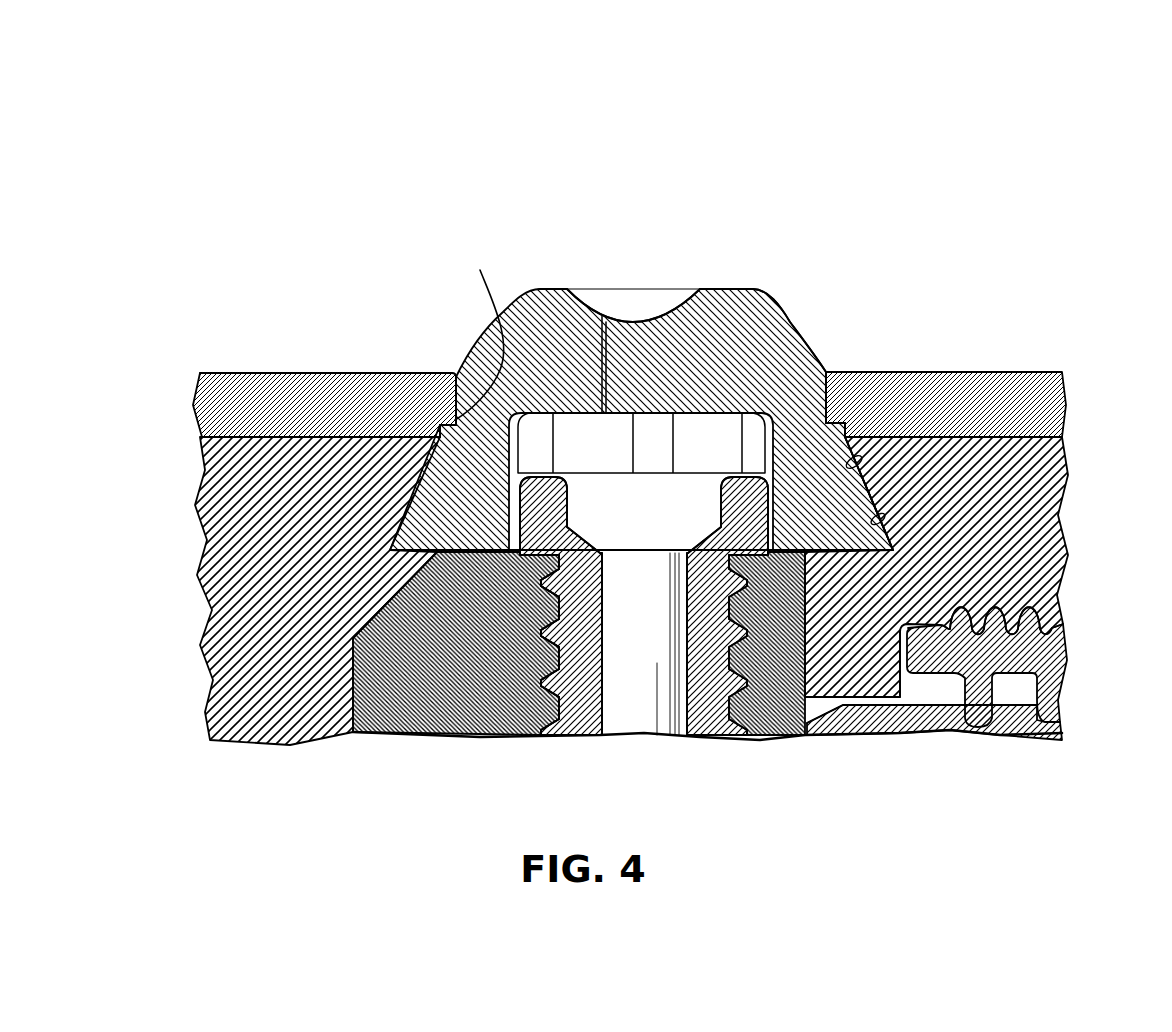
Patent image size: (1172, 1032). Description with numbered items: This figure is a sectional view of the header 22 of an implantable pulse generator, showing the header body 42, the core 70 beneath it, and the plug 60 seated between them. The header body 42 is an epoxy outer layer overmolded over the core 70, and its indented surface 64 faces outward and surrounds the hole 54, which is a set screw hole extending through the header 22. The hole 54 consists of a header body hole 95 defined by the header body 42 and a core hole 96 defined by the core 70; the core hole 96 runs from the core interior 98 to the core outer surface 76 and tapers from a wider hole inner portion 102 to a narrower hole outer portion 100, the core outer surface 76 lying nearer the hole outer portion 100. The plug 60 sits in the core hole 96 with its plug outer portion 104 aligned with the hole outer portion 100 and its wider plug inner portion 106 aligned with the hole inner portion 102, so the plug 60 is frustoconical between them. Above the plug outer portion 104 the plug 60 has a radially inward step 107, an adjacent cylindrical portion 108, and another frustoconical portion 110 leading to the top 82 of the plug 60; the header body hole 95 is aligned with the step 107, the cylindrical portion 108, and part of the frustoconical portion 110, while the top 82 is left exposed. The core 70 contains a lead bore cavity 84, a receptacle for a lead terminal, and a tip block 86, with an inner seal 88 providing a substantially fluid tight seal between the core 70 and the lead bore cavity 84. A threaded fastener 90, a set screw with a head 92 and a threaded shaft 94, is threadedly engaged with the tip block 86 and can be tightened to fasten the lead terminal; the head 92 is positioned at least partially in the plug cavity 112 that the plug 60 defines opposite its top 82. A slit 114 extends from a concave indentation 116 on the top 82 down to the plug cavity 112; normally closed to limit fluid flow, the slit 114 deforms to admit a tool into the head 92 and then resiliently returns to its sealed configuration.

The header 22 is at (988, 152).
The header body 42 is at (222, 400).
The hole 54 is at (469, 390).
The plug 60 is at (507, 282).
The indented surface 64 is at (222, 372).
The core 70 is at (230, 656).
The core outer surface 76 is at (230, 425).
The top 82 is at (540, 289).
The lead bore cavity 84 is at (1023, 713).
The tip block 86 is at (410, 708).
The inner seal 88 is at (1030, 650).
The threaded fastener 90 is at (634, 722).
The head 92 is at (548, 552).
The threaded shaft 94 is at (552, 653).
The header body hole 95 is at (480, 272).
The core hole 96 is at (410, 487).
The core interior 98 is at (883, 697).
The hole outer portion 100 is at (857, 458).
The hole inner portion 102 is at (882, 522).
The plug outer portion 104 is at (860, 455).
The plug inner portion 106 is at (887, 525).
The step 107 is at (838, 418).
The cylindrical portion 108 is at (832, 408).
The frustoconical portion 110 is at (790, 322).
The plug cavity 112 is at (713, 433).
The slit 114 is at (627, 325).
The concave indentation 116 is at (695, 310).